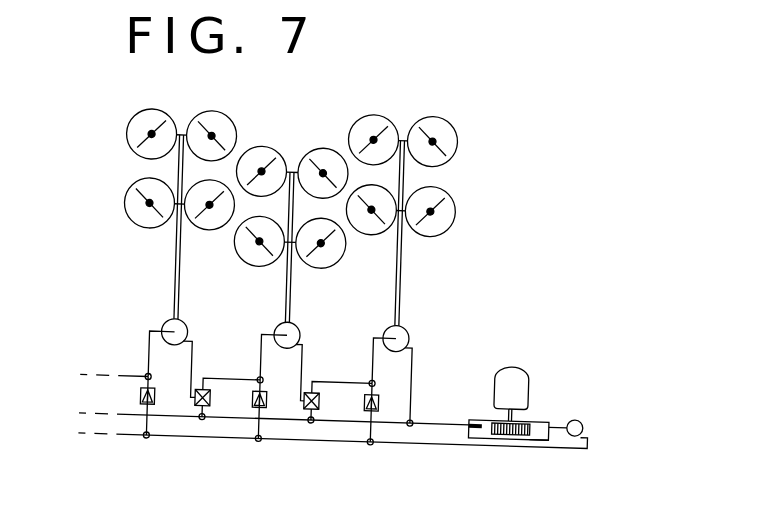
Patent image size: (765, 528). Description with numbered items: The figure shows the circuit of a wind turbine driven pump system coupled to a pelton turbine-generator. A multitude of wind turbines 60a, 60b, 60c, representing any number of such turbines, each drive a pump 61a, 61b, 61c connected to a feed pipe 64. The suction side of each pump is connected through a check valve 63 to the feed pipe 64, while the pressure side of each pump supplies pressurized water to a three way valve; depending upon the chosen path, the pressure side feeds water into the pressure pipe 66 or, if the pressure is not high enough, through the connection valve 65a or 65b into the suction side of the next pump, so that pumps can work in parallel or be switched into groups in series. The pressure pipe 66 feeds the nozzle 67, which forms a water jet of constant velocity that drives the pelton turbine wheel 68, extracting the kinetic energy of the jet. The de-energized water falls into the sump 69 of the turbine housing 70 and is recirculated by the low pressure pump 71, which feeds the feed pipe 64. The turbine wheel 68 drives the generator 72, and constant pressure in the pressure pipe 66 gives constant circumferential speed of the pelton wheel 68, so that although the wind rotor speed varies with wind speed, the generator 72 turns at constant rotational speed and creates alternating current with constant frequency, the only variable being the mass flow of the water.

The wind turbine 60a is at (171, 253).
The wind turbine 60b is at (286, 208).
The wind turbine 60c is at (396, 172).
The pump 61a is at (181, 322).
The pump 61b is at (294, 322).
The pump 61c is at (403, 322).
The check valve 63 is at (141, 394).
The feed pipe 64 is at (246, 436).
The connection valve 65a is at (223, 404).
The connection valve 65b is at (332, 406).
The pressure pipe 66 is at (217, 416).
The nozzle 67 is at (475, 410).
The pelton turbine wheel 68 is at (518, 428).
The sump 69 is at (540, 428).
The turbine housing 70 is at (540, 410).
The low pressure pump 71 is at (583, 415).
The generator 72 is at (526, 357).